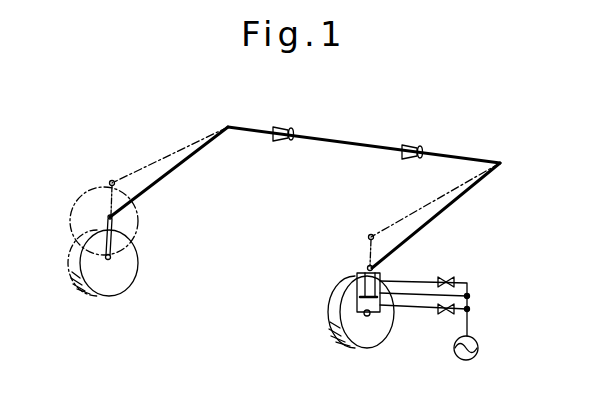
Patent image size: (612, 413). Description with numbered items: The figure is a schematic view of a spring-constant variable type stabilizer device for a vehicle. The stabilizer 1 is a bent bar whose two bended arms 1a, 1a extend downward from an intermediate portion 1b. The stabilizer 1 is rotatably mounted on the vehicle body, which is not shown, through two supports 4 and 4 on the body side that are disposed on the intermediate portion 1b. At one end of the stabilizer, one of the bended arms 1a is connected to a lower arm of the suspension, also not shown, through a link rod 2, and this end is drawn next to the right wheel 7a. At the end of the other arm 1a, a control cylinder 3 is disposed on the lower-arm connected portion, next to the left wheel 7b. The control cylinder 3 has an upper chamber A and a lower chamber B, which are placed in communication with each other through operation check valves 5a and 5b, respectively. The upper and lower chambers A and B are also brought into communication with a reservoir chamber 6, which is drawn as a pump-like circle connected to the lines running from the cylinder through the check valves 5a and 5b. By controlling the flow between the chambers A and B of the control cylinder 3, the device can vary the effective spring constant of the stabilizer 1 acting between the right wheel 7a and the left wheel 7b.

The stabilizer 1 is at (305, 178).
The bended arm 1a is at (180, 165).
The intermediate portion 1b is at (357, 143).
The link rod 2 is at (120, 236).
The control cylinder 3 is at (358, 270).
The support 4 is at (283, 143).
The operation check valve 5a is at (453, 278).
The operation check valve 5b is at (448, 314).
The reservoir chamber 6 is at (478, 347).
The right wheel 7a is at (100, 297).
The left wheel 7b is at (343, 345).
The upper chamber A is at (357, 277).
The lower chamber B is at (378, 318).